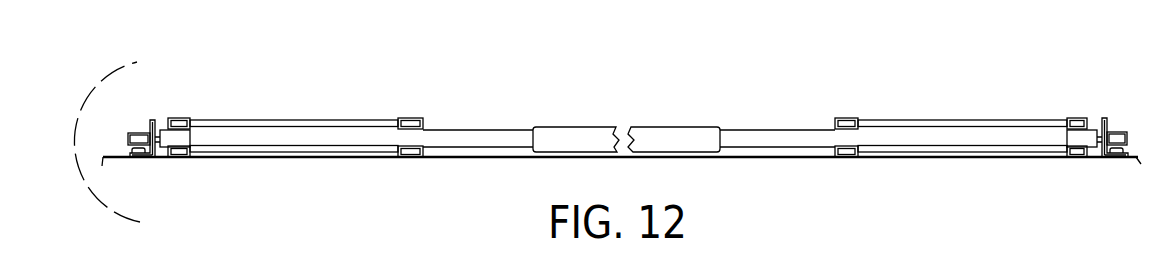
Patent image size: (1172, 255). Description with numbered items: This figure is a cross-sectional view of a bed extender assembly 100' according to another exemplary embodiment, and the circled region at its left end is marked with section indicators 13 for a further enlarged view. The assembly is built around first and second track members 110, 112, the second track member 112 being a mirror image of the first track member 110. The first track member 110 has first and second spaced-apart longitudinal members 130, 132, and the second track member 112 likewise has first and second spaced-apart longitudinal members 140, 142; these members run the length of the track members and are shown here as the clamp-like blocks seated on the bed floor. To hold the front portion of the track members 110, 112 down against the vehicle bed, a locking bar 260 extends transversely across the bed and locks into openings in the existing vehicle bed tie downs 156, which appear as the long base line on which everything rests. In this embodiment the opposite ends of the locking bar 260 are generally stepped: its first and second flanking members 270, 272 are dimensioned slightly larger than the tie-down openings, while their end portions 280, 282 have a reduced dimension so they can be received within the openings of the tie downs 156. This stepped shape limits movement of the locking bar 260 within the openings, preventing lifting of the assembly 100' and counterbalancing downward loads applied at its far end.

The bed extender assembly 100' is at (628, 84).
The first track member 110 is at (970, 116).
The second track member 112 is at (337, 113).
The first longitudinal member 130 is at (1070, 157).
The second longitudinal member 132 is at (838, 157).
The first longitudinal member 140 is at (177, 118).
The second longitudinal member 142 is at (403, 157).
The vehicle bed tie downs 156 is at (621, 206).
The locking bar 260 is at (584, 124).
The first flanking member 270 is at (337, 152).
The second flanking member 272 is at (932, 152).
The end portion 280 is at (142, 127).
The end portion 282 is at (1117, 125).
The section view indicator FIG. 13 is at (137, 62).